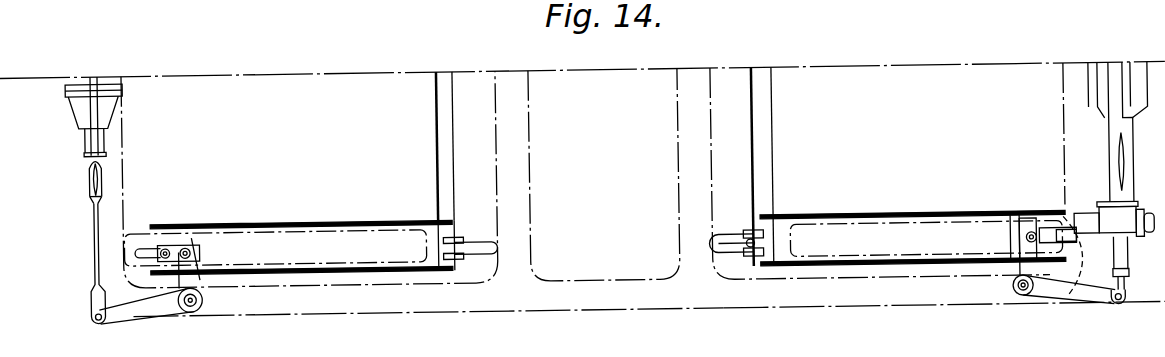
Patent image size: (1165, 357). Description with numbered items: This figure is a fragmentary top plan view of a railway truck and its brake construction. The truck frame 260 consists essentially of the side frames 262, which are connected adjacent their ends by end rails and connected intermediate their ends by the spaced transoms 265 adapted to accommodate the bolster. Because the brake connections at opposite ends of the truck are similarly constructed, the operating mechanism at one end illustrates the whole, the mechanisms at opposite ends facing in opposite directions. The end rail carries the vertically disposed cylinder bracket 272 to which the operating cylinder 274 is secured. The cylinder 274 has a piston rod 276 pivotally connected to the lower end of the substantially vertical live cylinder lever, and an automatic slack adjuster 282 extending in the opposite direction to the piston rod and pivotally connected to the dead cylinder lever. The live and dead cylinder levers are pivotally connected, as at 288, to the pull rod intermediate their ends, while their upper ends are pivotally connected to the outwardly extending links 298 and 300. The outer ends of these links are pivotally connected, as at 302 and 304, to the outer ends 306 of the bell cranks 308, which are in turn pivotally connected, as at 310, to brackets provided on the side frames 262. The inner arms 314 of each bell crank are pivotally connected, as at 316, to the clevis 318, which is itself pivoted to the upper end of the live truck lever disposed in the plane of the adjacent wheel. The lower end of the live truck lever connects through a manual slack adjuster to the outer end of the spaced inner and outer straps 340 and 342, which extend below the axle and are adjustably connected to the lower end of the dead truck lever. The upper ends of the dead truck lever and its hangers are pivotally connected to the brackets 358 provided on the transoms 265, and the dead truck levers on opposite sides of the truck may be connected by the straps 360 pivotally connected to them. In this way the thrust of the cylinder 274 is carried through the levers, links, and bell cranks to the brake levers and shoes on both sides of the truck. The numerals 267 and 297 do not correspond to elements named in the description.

The truck frame 260 is at (655, 307).
The side frames 262 is at (786, 306).
The transoms 265 is at (672, 138).
The partition 267 is at (1064, 118).
The cylinder bracket 272 is at (1088, 83).
The cylinder 274 is at (1138, 97).
The piston rod 276 is at (76, 138).
The automatic slack adjuster 282 is at (1102, 206).
The pivotal connection 288 is at (81, 178).
The coupling 297 is at (86, 194).
The link 298 is at (86, 234).
The link 300 is at (1094, 196).
The pivotal connection 302 is at (86, 318).
The pivotal connection 304 is at (1109, 319).
The outer ends of bell cranks 306 is at (125, 319).
The bell cranks 308 is at (1049, 300).
The pivotal connection 310 is at (1012, 305).
The inner arms of bell cranks 314 is at (1017, 280).
The pivotal connection 316 is at (190, 241).
The clevis 318 is at (168, 252).
The inner strap 340 is at (383, 206).
The outer strap 342 is at (331, 276).
The brackets 358 is at (473, 250).
The straps 360 is at (440, 128).